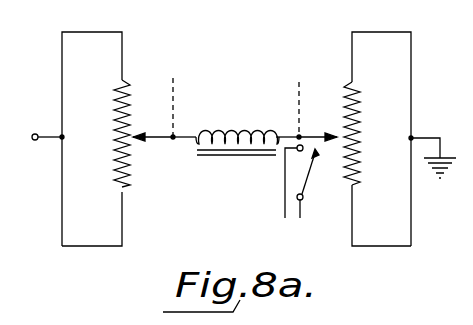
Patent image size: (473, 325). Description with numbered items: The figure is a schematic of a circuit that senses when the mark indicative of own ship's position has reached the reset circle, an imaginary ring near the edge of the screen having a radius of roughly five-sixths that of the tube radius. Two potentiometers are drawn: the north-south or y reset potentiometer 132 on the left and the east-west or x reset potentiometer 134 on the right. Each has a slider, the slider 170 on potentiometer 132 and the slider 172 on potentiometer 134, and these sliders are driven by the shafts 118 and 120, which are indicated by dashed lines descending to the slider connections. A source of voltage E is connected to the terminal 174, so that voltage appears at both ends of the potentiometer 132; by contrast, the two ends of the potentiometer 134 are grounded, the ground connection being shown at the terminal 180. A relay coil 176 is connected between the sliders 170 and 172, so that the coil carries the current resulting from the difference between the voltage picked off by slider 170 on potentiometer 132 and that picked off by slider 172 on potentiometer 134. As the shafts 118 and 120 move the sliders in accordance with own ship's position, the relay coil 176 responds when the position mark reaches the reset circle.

The north-south or y reset potentiometer 132 is at (103, 20).
The east-west or x reset potentiometer 134 is at (392, 27).
The shaft 118 is at (173, 90).
The shaft 120 is at (299, 98).
The slider 170 is at (157, 140).
The slider 172 is at (315, 133).
The terminal 174 is at (36, 141).
The relay coil 176 is at (255, 106).
The terminal 180 is at (422, 137).